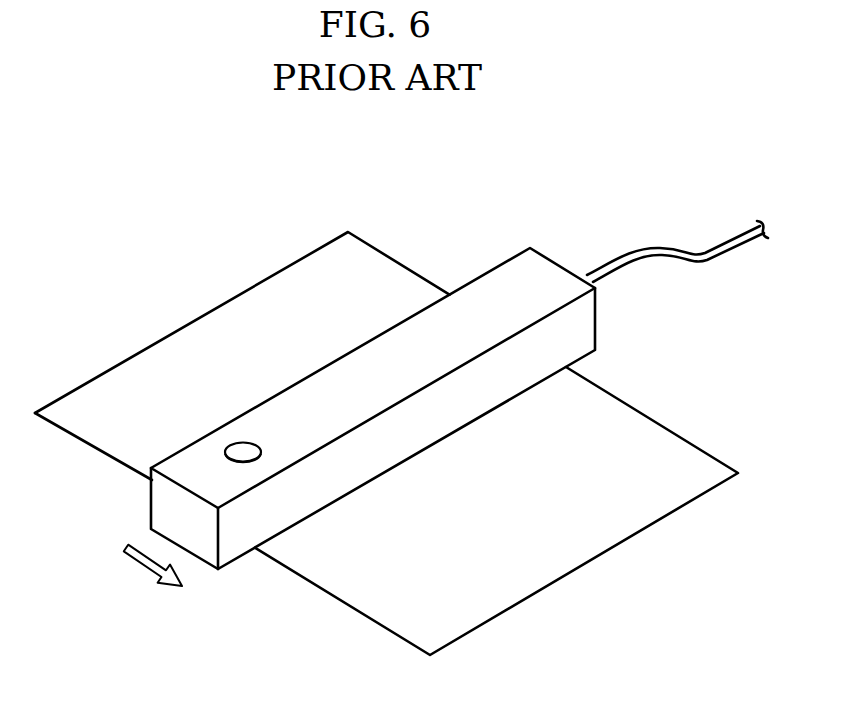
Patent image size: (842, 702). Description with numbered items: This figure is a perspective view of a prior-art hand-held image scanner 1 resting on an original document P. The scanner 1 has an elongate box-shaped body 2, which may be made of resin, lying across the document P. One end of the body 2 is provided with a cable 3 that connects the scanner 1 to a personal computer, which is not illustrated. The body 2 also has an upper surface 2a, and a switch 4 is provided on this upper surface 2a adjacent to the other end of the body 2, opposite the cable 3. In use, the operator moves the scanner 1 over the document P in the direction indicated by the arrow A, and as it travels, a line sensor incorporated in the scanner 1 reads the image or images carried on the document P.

The hand-held image scanner 1 is at (410, 363).
The elongate box-shaped body 2 is at (368, 408).
The upper surface 2a is at (185, 457).
The cable 3 is at (666, 247).
The switch 4 is at (238, 457).
The original document P is at (200, 313).
The arrow A is at (142, 568).